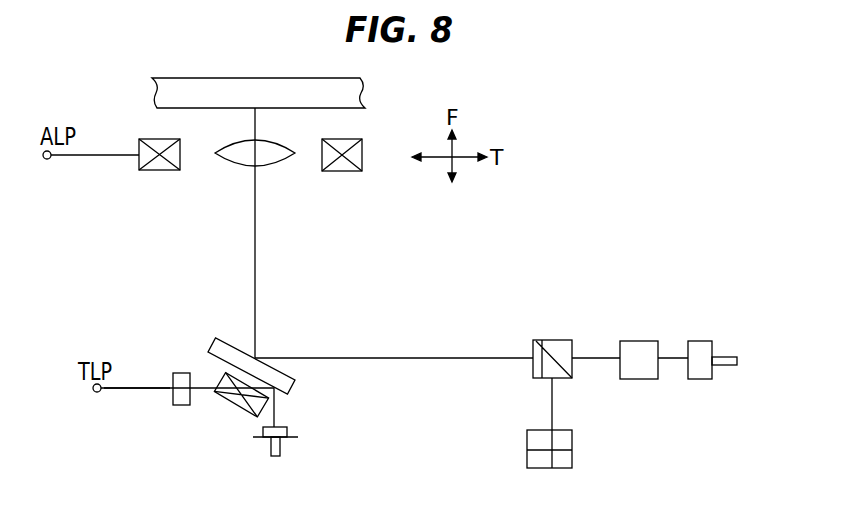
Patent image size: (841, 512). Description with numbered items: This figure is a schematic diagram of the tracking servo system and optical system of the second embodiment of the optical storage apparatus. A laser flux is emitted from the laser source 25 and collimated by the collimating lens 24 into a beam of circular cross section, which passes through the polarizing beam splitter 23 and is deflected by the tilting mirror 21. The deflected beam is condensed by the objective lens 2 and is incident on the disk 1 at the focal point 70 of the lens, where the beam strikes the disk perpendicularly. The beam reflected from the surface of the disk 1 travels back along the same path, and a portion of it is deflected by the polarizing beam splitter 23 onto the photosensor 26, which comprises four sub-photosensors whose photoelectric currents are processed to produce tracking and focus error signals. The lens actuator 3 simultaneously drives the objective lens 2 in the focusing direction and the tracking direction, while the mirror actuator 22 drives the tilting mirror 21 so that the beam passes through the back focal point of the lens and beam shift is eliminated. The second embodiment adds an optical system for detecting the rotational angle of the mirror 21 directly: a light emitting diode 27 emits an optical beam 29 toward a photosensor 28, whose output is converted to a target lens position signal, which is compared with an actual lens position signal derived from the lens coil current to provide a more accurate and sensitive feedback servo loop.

The disk 1 is at (270, 83).
The focal point 70 is at (256, 93).
The objective lens 2 is at (268, 167).
The lens actuator 3 is at (355, 172).
The tilting mirror 21 is at (216, 343).
The mirror actuator 22 is at (243, 412).
The polarizing beam splitter 23 is at (562, 340).
The collimating lens 24 is at (660, 323).
The laser source 25 is at (714, 323).
The photosensor 26 is at (572, 456).
The light emitting diode 27 is at (286, 449).
The photosensor 28 is at (173, 394).
The optical beam 29 is at (138, 388).